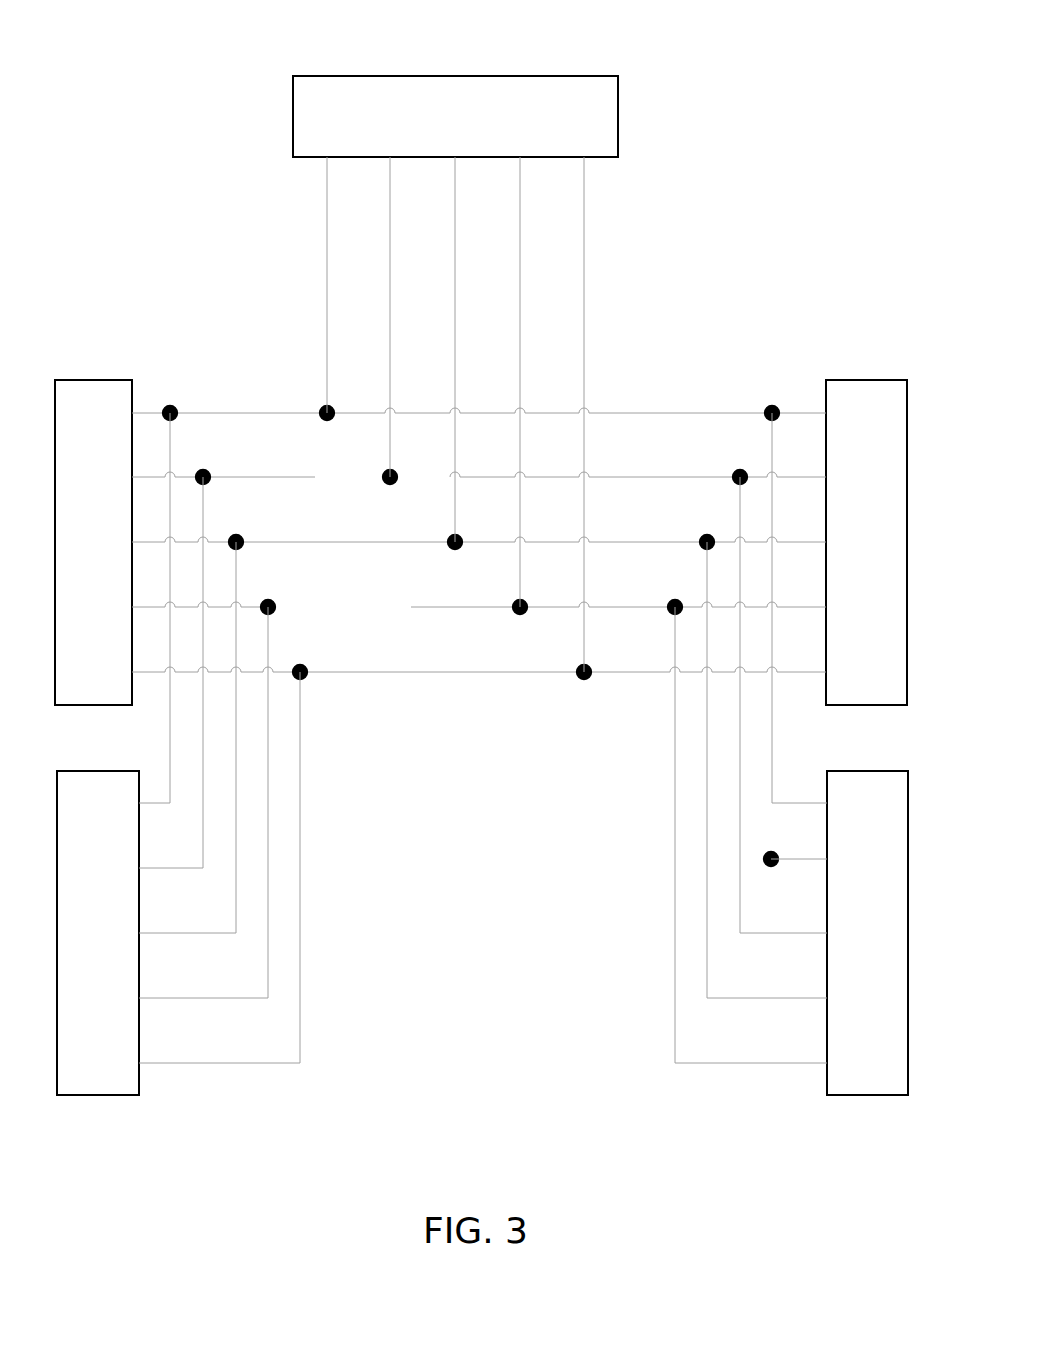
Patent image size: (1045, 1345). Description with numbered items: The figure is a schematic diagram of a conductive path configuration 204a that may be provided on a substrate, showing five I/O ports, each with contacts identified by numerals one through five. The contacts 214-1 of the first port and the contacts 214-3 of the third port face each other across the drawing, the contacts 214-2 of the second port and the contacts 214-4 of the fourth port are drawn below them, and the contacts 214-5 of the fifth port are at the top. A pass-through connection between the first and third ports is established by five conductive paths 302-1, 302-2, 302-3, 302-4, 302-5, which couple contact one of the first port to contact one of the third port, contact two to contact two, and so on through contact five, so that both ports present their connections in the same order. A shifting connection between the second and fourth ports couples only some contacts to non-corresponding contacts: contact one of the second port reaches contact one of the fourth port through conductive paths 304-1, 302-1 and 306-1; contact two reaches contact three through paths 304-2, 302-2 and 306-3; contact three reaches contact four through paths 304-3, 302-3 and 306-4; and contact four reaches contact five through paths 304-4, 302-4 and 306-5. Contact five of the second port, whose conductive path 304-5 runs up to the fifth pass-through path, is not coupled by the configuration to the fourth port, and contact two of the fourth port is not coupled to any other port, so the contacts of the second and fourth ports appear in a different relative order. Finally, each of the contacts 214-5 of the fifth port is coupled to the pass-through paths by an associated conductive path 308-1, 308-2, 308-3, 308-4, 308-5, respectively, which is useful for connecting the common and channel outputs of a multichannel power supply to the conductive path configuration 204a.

The conductive path configuration 204a is at (222, 75).
The contacts of I/O port J1 214-1 is at (78, 380).
The contacts of I/O port J2 214-2 is at (95, 1101).
The contacts of I/O port J3 214-3 is at (870, 378).
The contacts of I/O port J4 214-4 is at (869, 1096).
The contacts of I/O port J5 214-5 is at (543, 123).
The conductive path 302-1 is at (262, 413).
The conductive path 302-2 is at (315, 477).
The conductive path 302-3 is at (625, 543).
The conductive path 302-4 is at (452, 607).
The conductive path 302-5 is at (419, 673).
The conductive path 304-1 is at (170, 802).
The conductive path 304-2 is at (150, 866).
The conductive path 304-3 is at (175, 932).
The conductive path 304-4 is at (197, 997).
The conductive path 304-5 is at (302, 999).
The conductive path 306-1 is at (803, 803).
The conductive path 306-3 is at (786, 932).
The conductive path 306-4 is at (769, 998).
The conductive path 306-5 is at (782, 1063).
The conductive path 308-1 is at (327, 188).
The conductive path 308-2 is at (390, 275).
The conductive path 308-3 is at (455, 368).
The conductive path 308-4 is at (519, 214).
The conductive path 308-5 is at (584, 266).